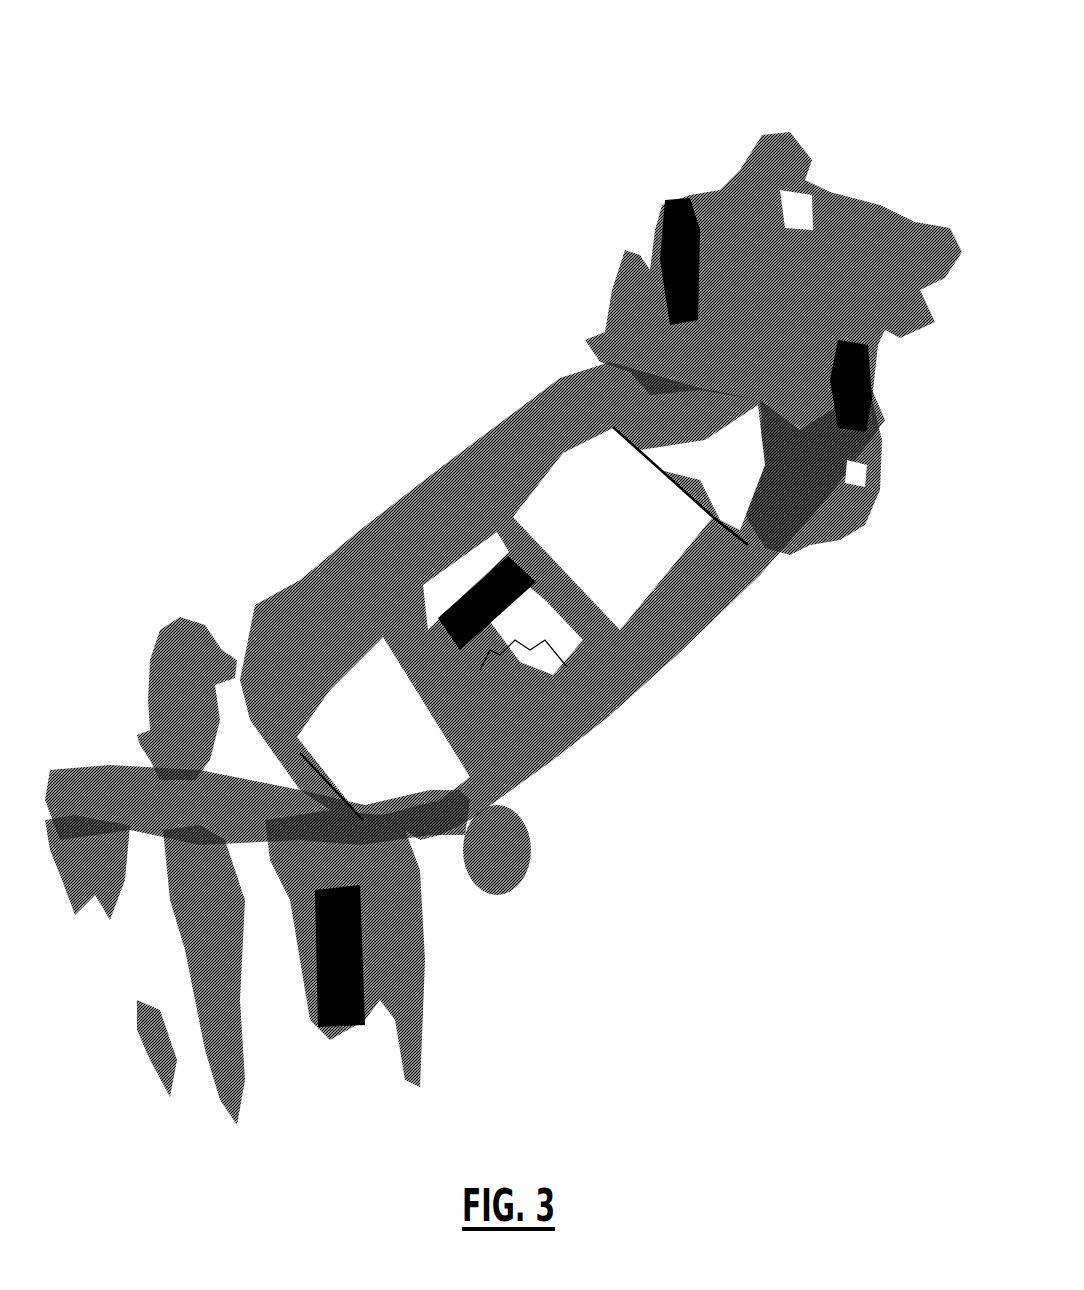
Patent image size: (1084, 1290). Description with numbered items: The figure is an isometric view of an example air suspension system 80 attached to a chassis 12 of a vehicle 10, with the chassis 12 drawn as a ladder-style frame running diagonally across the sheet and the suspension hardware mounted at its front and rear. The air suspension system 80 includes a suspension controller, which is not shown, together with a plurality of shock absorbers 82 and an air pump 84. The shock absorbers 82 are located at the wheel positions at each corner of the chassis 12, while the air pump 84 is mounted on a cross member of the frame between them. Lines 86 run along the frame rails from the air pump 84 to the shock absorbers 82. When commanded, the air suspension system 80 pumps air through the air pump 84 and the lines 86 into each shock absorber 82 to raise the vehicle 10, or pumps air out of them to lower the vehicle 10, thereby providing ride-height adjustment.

The vehicle 10 is at (503, 568).
The chassis 12 is at (500, 456).
The air suspension system 80 is at (503, 628).
The shock absorbers 82 is at (668, 212).
The air pump 84 is at (467, 593).
The lines 86 is at (603, 720).